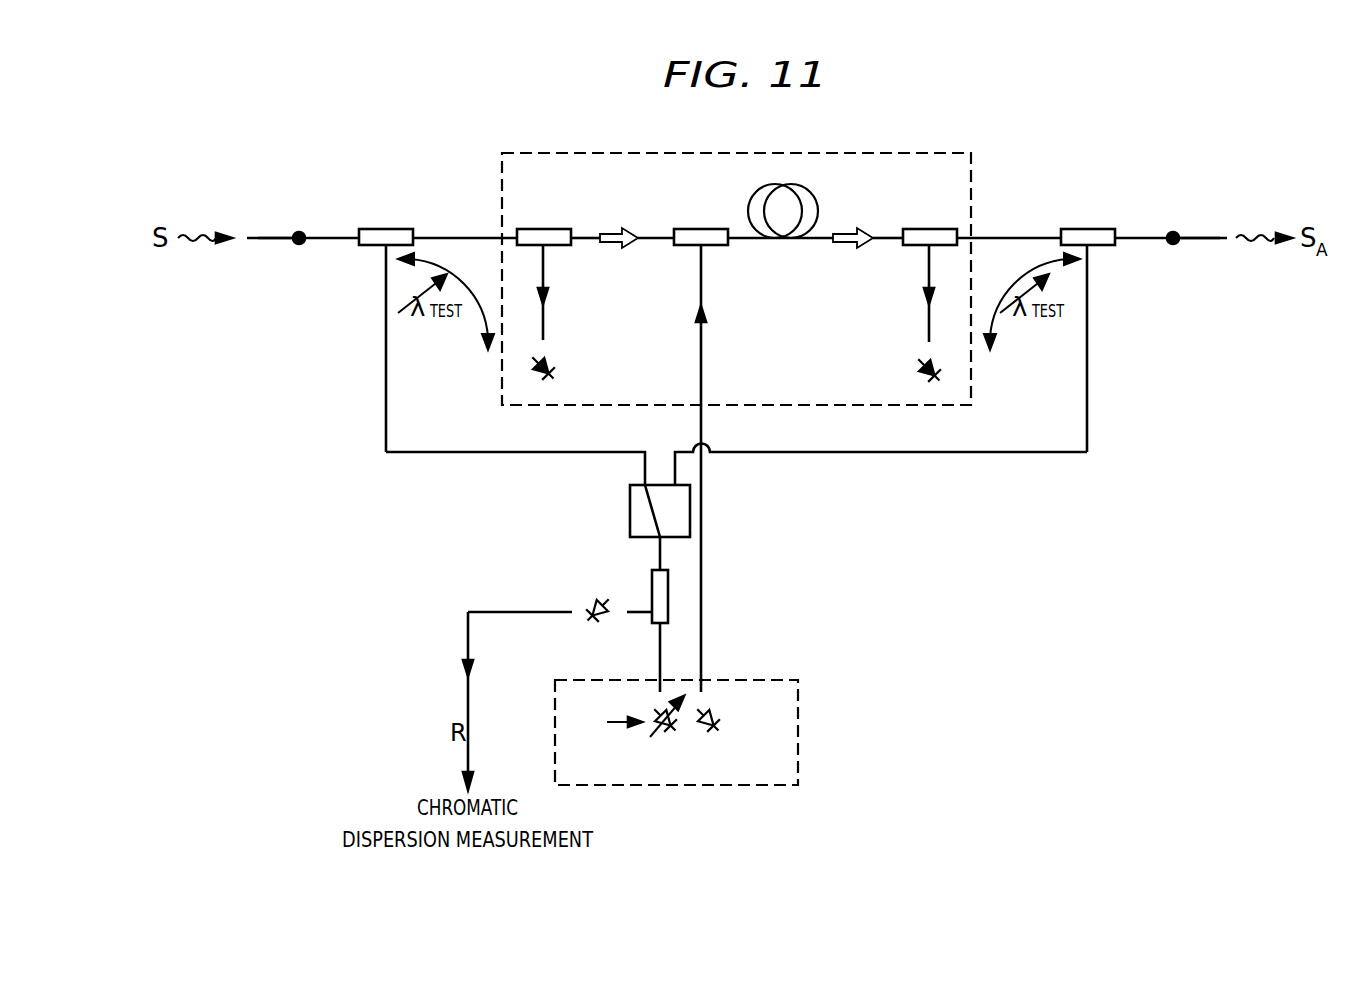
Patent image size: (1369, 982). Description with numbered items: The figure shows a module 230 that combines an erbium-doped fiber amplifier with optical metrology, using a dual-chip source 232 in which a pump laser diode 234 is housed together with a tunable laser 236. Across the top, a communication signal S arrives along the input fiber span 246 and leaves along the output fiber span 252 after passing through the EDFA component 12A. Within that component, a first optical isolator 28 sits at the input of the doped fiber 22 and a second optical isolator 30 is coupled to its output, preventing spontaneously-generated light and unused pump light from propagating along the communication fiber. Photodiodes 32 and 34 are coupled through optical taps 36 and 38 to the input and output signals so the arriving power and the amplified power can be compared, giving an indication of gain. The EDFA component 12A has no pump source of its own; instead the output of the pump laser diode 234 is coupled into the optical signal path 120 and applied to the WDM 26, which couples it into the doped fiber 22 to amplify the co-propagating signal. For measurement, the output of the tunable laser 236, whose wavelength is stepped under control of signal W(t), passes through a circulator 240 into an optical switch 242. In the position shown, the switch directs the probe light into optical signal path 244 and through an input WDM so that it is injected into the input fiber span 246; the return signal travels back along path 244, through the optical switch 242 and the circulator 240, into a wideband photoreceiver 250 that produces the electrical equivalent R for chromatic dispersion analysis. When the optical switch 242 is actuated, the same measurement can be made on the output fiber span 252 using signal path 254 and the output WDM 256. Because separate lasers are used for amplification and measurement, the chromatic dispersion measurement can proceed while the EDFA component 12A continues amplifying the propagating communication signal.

The EDFA component 12A is at (634, 147).
The doped fiber 22 is at (822, 201).
The WDM 26 is at (698, 228).
The first optical isolator 28 is at (614, 252).
The second optical isolator 30 is at (848, 252).
The photodiode 32 is at (552, 366).
The photodiode 34 is at (915, 366).
The optical tap 36 is at (541, 228).
The optical tap 38 is at (926, 228).
The optical signal path 120 is at (703, 591).
The module 230 is at (870, 647).
The dual-chip source 232 is at (800, 736).
The pump laser diode 234 is at (706, 734).
The tunable laser 236 is at (654, 732).
The circulator 240 is at (652, 580).
The optical switch 242 is at (630, 510).
The optical signal path 244 is at (386, 406).
The input fiber span 246 is at (270, 236).
The photoreceiver 250 is at (594, 604).
The output fiber span 252 is at (1201, 236).
The signal path 254 is at (1089, 406).
The output WDM 256 is at (1080, 228).